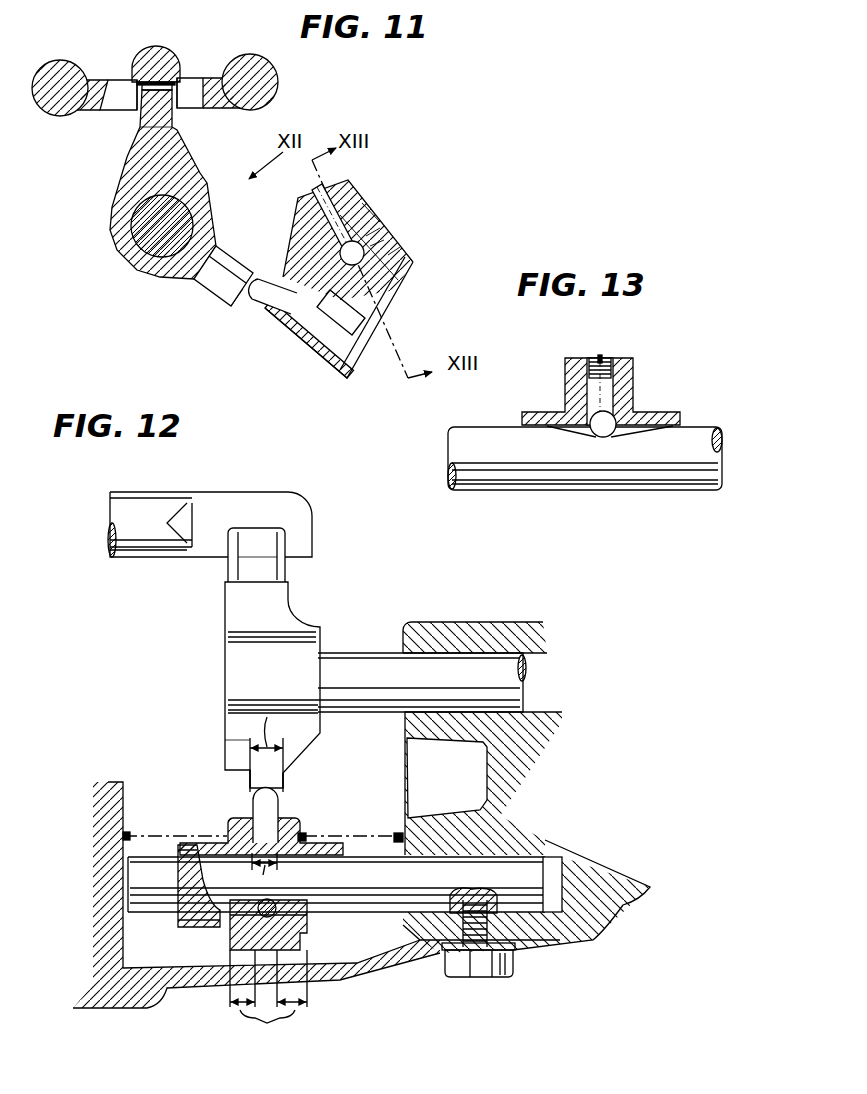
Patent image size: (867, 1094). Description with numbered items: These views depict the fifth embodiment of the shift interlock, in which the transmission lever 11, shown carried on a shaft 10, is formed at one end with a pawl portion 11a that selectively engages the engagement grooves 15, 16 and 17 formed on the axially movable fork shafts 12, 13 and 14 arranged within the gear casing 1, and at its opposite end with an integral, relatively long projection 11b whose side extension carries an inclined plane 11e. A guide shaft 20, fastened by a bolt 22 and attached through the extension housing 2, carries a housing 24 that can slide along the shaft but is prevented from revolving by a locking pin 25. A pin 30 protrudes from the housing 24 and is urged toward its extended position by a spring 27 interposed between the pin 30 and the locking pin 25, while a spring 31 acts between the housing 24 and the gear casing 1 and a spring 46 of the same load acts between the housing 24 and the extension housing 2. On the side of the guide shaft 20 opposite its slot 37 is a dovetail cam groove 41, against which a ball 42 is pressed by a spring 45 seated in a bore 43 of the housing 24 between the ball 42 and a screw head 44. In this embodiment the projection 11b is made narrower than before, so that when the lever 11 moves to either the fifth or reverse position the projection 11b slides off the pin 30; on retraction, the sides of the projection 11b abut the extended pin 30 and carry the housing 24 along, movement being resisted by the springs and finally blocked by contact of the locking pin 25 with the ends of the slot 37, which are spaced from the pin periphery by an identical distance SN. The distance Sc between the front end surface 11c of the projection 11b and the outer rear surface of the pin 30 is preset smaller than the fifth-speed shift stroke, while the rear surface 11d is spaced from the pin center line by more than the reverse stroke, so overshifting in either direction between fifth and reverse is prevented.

In FIG. 12, the gear casing 1 is at (102, 1000).
In FIG. 12, the extension housing 2 is at (405, 760).
In FIG. 11, the shaft 10 is at (137, 230).
In FIG. 12, the shaft 10 is at (358, 657).
In FIG. 11, the transmission lever 11 is at (208, 174).
In FIG. 12, the transmission lever 11 is at (225, 692).
In FIG. 11, the pawl portion 11a is at (140, 150).
In FIG. 12, the pawl portion 11a is at (280, 570).
In FIG. 11, the projection 11b is at (212, 294).
In FIG. 12, the projection 11b is at (227, 740).
In FIG. 12, the front end surface 11c is at (250, 780).
In FIG. 12, the rear surface 11d is at (283, 783).
In FIG. 11, the inclined plane 11e is at (242, 312).
In FIG. 11, the fork shaft 12 is at (260, 58).
In FIG. 11, the fork shaft 13 is at (160, 60).
In FIG. 12, the fork shaft 13 is at (160, 497).
In FIG. 11, the fork shaft 14 is at (55, 62).
In FIG. 11, the engagement groove 15 is at (193, 80).
In FIG. 11, the engagement groove 16 is at (153, 58).
In FIG. 12, the engagement groove 16 is at (247, 528).
In FIG. 11, the engagement groove 17 is at (113, 83).
In FIG. 11, the guide shaft 20 is at (390, 287).
In FIG. 13, the guide shaft 20 is at (482, 432).
In FIG. 12, the guide shaft 20 is at (512, 857).
In FIG. 12, the bolt 22 is at (478, 972).
In FIG. 11, the housing 24 is at (303, 238).
In FIG. 13, the housing 24 is at (565, 377).
In FIG. 12, the housing 24 is at (297, 828).
In FIG. 11, the locking pin 25 is at (340, 353).
In FIG. 12, the locking pin 25 is at (242, 906).
In FIG. 11, the spring 27 is at (318, 363).
In FIG. 11, the pin 30 is at (263, 283).
In FIG. 12, the pin 30 is at (270, 800).
In FIG. 12, the spring 31 is at (168, 835).
In FIG. 12, the slot 37 is at (293, 900).
In FIG. 11, the dovetail cam groove 41 is at (397, 250).
In FIG. 13, the dovetail cam groove 41 is at (577, 431).
In FIG. 11, the ball 42 is at (377, 243).
In FIG. 13, the ball 42 is at (607, 437).
In FIG. 11, the bore 43 is at (355, 240).
In FIG. 13, the bore 43 is at (603, 424).
In FIG. 11, the screw head 44 is at (322, 190).
In FIG. 13, the screw head 44 is at (607, 358).
In FIG. 11, the spring 45 is at (373, 230).
In FIG. 13, the spring 45 is at (617, 403).
In FIG. 12, the spring 46 is at (330, 938).
In FIG. 12, the distance Sc is at (265, 796).
In FIG. 12, the distance SN is at (268, 1003).